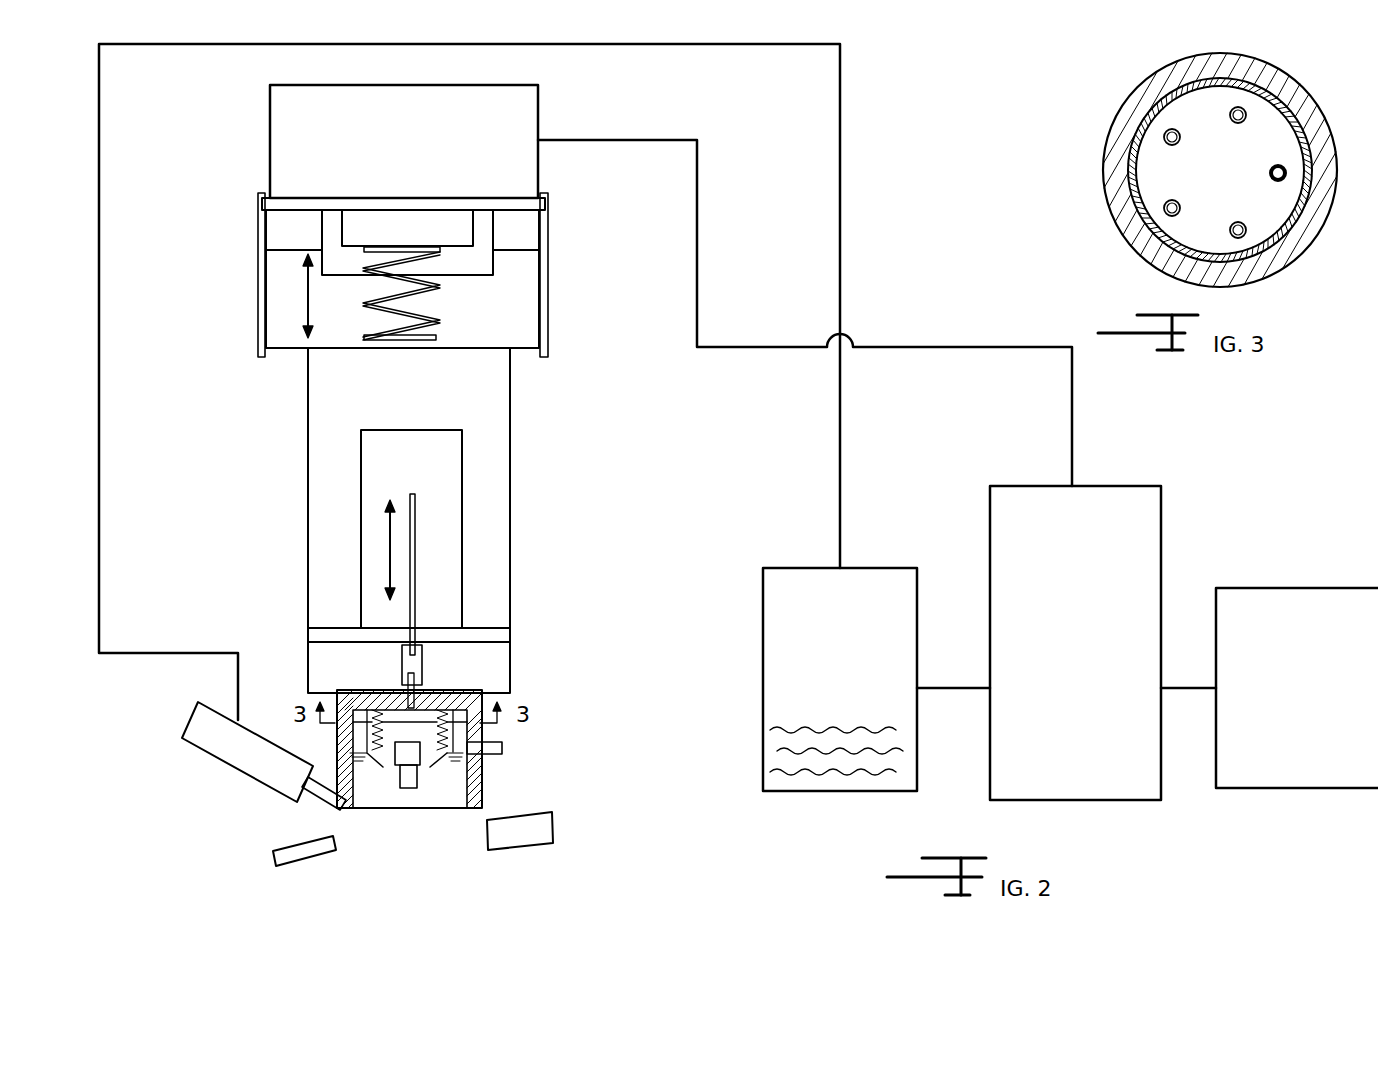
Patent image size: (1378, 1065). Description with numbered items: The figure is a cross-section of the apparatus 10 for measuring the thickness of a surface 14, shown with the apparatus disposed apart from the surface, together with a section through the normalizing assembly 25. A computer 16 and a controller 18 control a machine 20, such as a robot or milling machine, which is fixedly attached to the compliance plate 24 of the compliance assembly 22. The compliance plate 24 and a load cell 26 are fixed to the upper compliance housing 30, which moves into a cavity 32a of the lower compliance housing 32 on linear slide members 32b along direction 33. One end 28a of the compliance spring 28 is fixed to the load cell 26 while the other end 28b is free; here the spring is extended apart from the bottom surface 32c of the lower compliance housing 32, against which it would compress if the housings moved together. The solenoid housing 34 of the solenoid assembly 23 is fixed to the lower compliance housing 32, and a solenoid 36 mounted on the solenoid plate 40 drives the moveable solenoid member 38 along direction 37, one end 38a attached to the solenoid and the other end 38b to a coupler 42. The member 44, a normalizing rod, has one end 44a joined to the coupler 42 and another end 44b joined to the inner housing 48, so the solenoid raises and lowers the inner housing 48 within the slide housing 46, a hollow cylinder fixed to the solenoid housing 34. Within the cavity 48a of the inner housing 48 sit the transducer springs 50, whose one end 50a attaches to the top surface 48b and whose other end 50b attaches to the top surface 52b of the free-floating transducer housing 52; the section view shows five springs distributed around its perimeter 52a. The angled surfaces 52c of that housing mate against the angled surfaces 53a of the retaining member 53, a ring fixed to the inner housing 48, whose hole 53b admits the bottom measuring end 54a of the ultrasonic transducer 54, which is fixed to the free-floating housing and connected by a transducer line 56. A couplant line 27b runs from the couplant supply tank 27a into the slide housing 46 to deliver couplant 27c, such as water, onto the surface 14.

In FIG. 2, the apparatus 10 is at (884, 206).
In FIG. 2, the surface 14 is at (485, 820).
In FIG. 2, the computer 16 is at (1282, 690).
In FIG. 2, the controller 18 is at (1057, 661).
In FIG. 2, the machine 20 is at (531, 113).
In FIG. 2, the compliance assembly 22 is at (549, 282).
In FIG. 2, the solenoid assembly 23 is at (512, 452).
In FIG. 2, the compliance plate 24 is at (318, 198).
In FIG. 2, the normalizing assembly 25 is at (481, 768).
In FIG. 2, the load cell 26 is at (435, 222).
In FIG. 2, the couplant supply tank 27a is at (811, 625).
In FIG. 2, the couplant line 27b is at (99, 562).
In FIG. 2, the couplant 27c is at (836, 719).
In FIG. 2, the compliance spring 28 is at (440, 320).
In FIG. 2, the end of compliance spring 28a is at (400, 247).
In FIG. 2, the other end of compliance spring 28b is at (415, 349).
In FIG. 2, the upper compliance housing 30 is at (493, 238).
In FIG. 2, the lower compliance housing 32 is at (510, 252).
In FIG. 2, the cavity 32a is at (343, 323).
In FIG. 2, the linear slide members 32b is at (258, 238).
In FIG. 2, the bottom surface 32c is at (383, 349).
In FIG. 2, the direction 33 is at (305, 291).
In FIG. 2, the solenoid housing 34 is at (308, 513).
In FIG. 2, the solenoid 36 is at (371, 467).
In FIG. 2, the direction 37 is at (389, 563).
In FIG. 2, the moveable solenoid member 38 is at (418, 527).
In FIG. 2, the end of moveable solenoid member 38a is at (418, 494).
In FIG. 2, the other end of moveable solenoid member 38b is at (423, 660).
In FIG. 2, the solenoid plate 40 is at (410, 690).
In FIG. 2, the coupler 42 is at (433, 673).
In FIG. 2, the member 44 is at (405, 693).
In FIG. 2, the end of member 44a is at (403, 680).
In FIG. 2, the another end of member 44b is at (410, 726).
In FIG. 2, the slide housing 46 is at (481, 788).
In FIG. 2, the inner housing 48 is at (372, 713).
In FIG. 2, the cavity 48a is at (427, 713).
In FIG. 2, the top surface 48b is at (413, 780).
In FIG. 2, the transducer springs 50 is at (497, 693).
In FIG. 3, the transducer springs 50 is at (1240, 222).
In FIG. 2, the end of transducer springs 50a is at (478, 690).
In FIG. 2, the other end of transducer springs 50b is at (363, 757).
In FIG. 2, the free-floating transducer housing 52 is at (393, 767).
In FIG. 3, the free-floating transducer housing 52 is at (1300, 210).
In FIG. 3, the perimeter 52a is at (1208, 223).
In FIG. 2, the top surface 52b is at (450, 790).
In FIG. 2, the angled surfaces 52c is at (377, 773).
In FIG. 2, the free-floating transducer housing retaining member 53 is at (481, 757).
In FIG. 2, the angled surfaces 53a is at (363, 760).
In FIG. 2, the hole 53b is at (367, 760).
In FIG. 2, the transducer 54 is at (412, 790).
In FIG. 2, the bottom measuring end 54a is at (410, 783).
In FIG. 2, the transducer line 56 is at (493, 750).